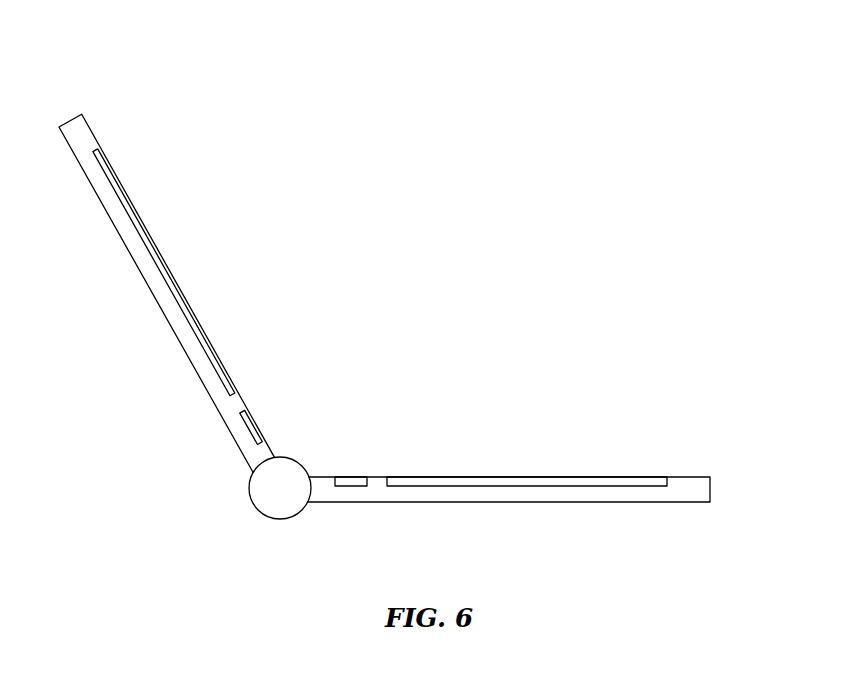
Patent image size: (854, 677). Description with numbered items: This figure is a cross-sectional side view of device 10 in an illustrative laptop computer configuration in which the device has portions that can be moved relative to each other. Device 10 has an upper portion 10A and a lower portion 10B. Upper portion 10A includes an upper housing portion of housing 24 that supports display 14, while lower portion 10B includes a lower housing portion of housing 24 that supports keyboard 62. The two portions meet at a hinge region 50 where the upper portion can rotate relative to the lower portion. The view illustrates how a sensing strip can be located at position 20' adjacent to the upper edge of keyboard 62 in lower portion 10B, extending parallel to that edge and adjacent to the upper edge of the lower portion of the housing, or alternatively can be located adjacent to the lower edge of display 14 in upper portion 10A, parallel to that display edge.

The device 10 is at (500, 160).
The upper portion 10A is at (226, 481).
The lower portion 10B is at (708, 517).
The display 14 is at (188, 307).
The sensing strip position 20' is at (364, 450).
The housing 24 is at (82, 132).
The hinge 50 is at (270, 497).
The keyboard 62 is at (518, 477).